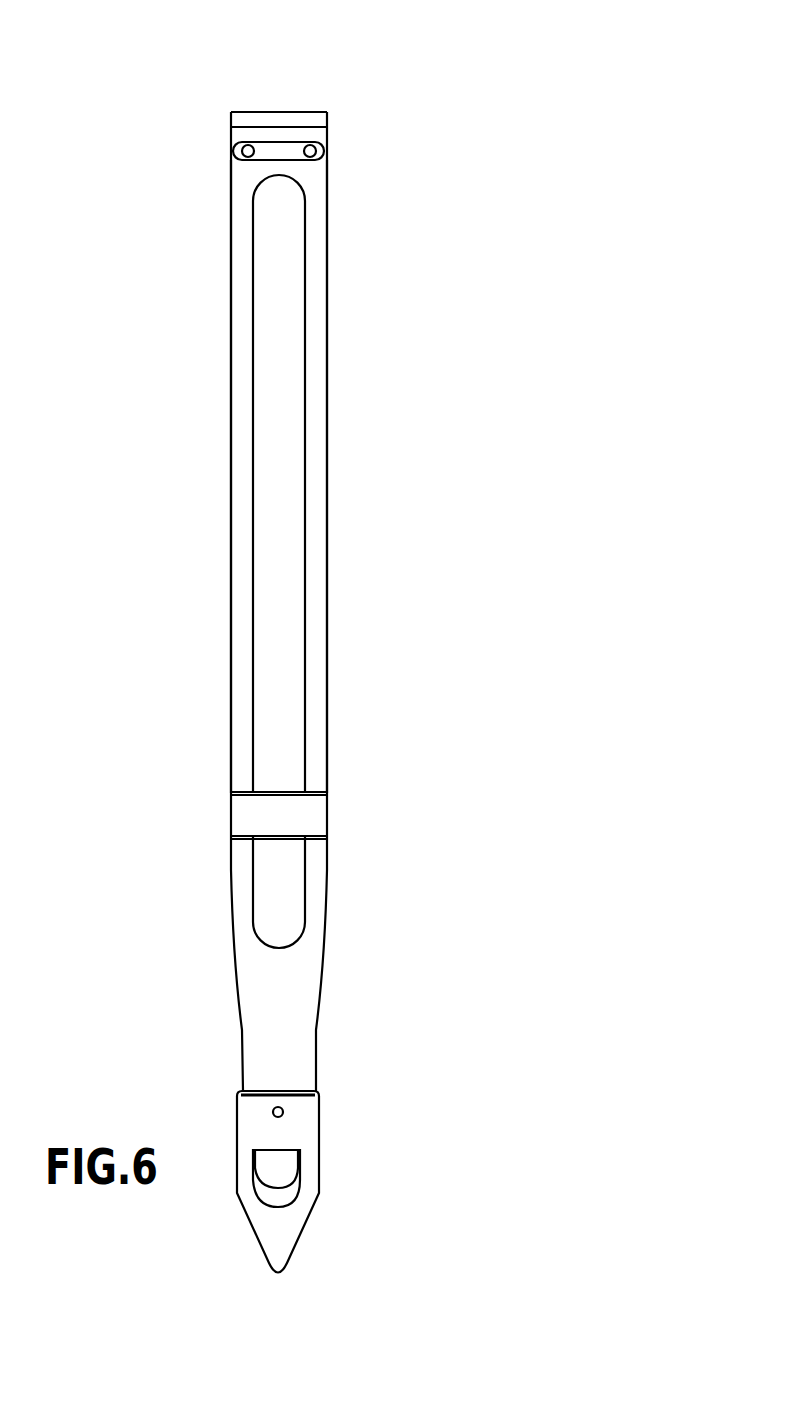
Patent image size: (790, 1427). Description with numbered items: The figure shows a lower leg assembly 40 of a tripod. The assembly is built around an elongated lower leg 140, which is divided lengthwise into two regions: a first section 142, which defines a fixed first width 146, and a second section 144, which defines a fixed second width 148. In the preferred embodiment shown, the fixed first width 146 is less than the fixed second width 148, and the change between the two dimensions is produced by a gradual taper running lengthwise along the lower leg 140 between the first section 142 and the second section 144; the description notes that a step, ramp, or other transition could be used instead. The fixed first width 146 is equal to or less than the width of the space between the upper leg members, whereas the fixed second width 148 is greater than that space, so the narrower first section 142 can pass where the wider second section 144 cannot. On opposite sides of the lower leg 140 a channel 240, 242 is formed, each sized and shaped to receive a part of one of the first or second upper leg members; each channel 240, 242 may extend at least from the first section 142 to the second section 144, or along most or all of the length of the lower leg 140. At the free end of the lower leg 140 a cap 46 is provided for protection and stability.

The lower leg assembly 40 is at (328, 387).
The cap 46 is at (319, 1123).
The lower leg 140 is at (280, 583).
The first section 142 is at (239, 227).
The second section 144 is at (245, 905).
The fixed first width 146 is at (327, 107).
The fixed second width 148 is at (403, 849).
The channel 240 is at (327, 672).
The channel 242 is at (231, 683).